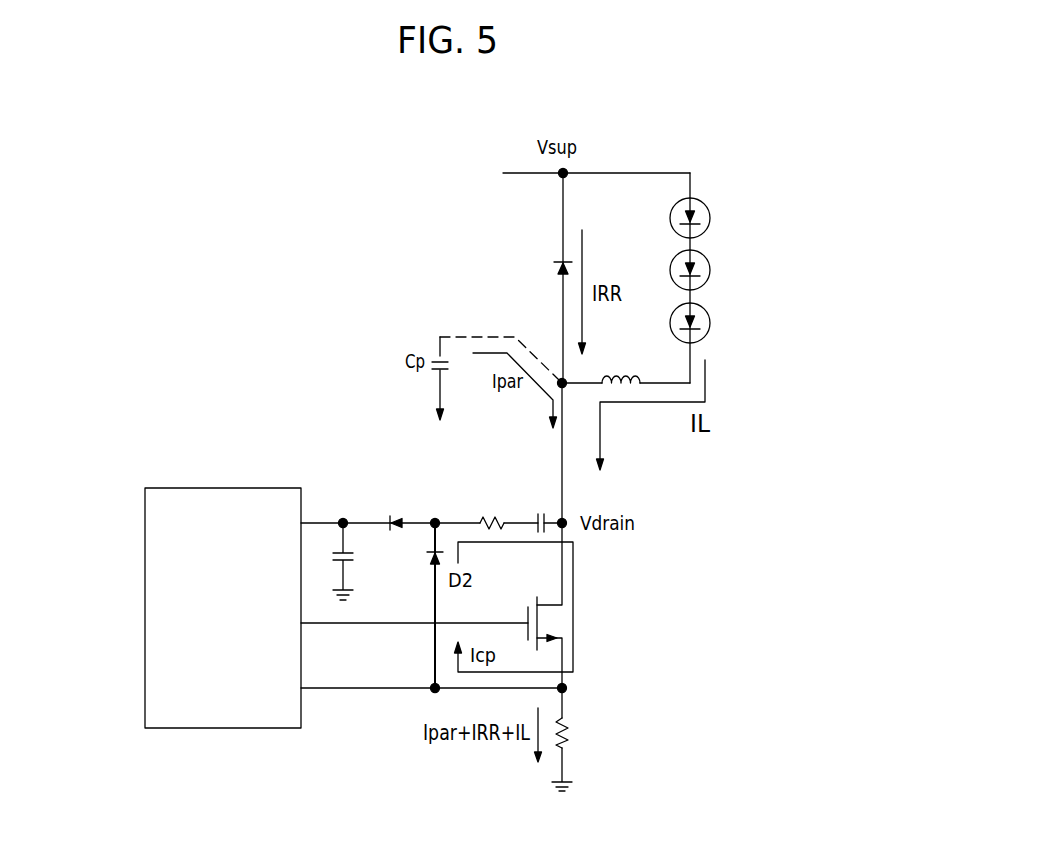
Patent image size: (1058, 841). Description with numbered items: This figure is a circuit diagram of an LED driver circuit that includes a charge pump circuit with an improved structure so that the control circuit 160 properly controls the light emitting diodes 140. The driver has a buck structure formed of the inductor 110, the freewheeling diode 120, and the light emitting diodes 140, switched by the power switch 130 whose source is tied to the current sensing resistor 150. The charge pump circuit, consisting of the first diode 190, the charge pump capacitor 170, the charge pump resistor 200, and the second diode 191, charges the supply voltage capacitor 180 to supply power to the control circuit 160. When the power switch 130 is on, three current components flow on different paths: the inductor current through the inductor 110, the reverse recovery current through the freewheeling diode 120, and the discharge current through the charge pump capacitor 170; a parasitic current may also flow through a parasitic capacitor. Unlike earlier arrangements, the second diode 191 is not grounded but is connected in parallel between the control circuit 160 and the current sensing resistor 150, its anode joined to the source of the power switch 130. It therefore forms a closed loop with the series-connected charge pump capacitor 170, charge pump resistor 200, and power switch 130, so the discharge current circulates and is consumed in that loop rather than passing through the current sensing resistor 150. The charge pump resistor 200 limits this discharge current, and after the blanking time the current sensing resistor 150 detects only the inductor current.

The inductor L 110 is at (632, 396).
The freewheeling diode DFW 120 is at (536, 262).
The power switch MSW 130 is at (567, 609).
The light emitting diodes LEDs 140 is at (713, 328).
The current sensing resistor Rcs 150 is at (575, 712).
The control circuit 160 is at (145, 608).
The charge pump capacitor Ccp 170 is at (549, 478).
The VDD capacitor CVDD 180 is at (331, 529).
The first diode D1 190 is at (387, 503).
The second diode D2 191 is at (422, 597).
The charge pump resistor Rcp 200 is at (488, 480).